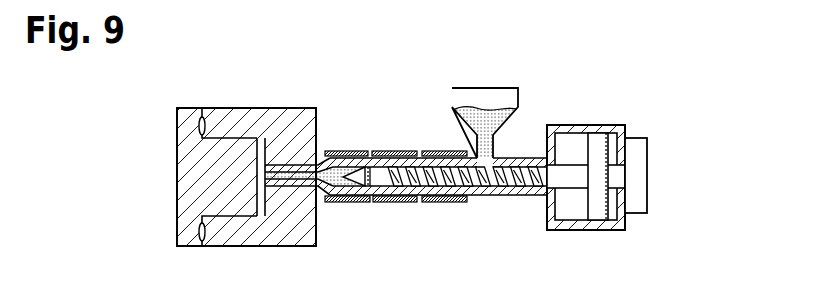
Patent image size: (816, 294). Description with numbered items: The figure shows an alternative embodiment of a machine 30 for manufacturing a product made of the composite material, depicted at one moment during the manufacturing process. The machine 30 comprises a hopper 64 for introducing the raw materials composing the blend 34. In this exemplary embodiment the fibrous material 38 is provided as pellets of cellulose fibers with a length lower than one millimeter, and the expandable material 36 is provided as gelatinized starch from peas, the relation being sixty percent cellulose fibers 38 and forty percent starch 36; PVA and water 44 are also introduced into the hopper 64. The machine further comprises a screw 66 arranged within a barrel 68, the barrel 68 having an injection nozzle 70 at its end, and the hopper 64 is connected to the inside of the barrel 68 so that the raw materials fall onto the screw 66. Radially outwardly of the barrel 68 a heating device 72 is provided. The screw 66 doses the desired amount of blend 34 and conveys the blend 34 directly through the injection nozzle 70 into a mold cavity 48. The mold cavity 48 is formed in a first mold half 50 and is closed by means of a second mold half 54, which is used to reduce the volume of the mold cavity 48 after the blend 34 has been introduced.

The machine 30 is at (660, 142).
The blend 34 is at (330, 152).
The expandable material 36 is at (466, 106).
The fibrous material 38 is at (493, 125).
The water 44 is at (500, 110).
The mold cavity 48 is at (261, 150).
The first mold half 50 is at (205, 222).
The second mold half 54 is at (200, 178).
The hopper 64 is at (483, 97).
The screw 66 is at (410, 202).
The barrel 68 is at (460, 202).
The injection nozzle 70 is at (270, 172).
The heating device 72 is at (400, 152).